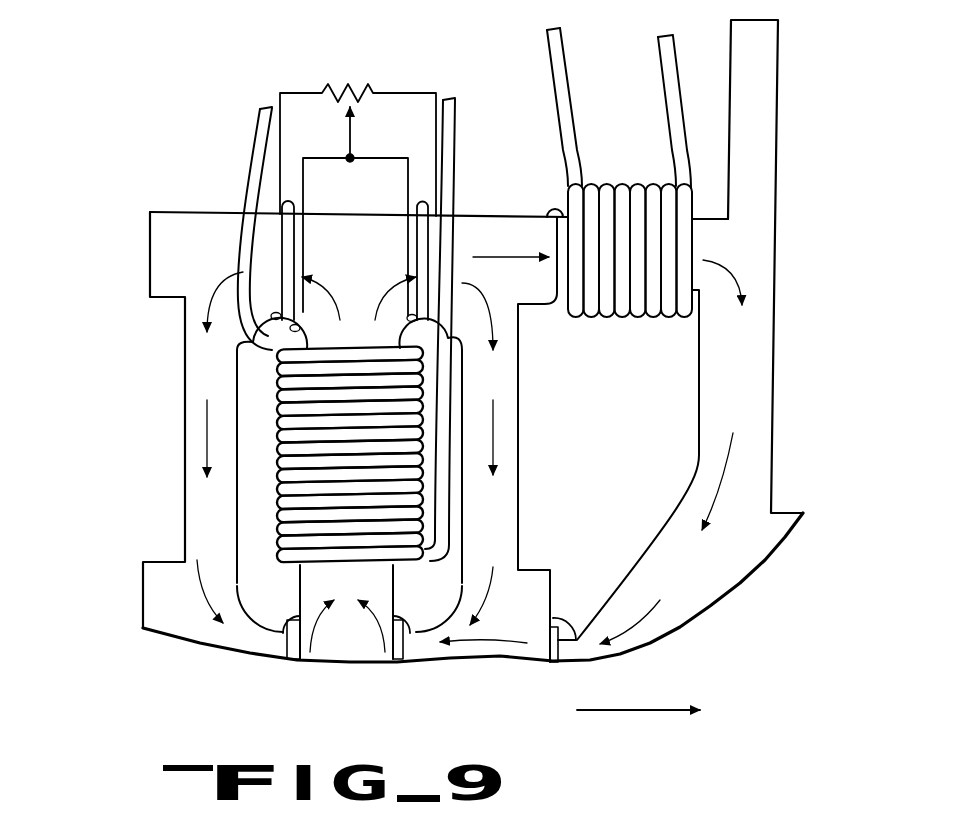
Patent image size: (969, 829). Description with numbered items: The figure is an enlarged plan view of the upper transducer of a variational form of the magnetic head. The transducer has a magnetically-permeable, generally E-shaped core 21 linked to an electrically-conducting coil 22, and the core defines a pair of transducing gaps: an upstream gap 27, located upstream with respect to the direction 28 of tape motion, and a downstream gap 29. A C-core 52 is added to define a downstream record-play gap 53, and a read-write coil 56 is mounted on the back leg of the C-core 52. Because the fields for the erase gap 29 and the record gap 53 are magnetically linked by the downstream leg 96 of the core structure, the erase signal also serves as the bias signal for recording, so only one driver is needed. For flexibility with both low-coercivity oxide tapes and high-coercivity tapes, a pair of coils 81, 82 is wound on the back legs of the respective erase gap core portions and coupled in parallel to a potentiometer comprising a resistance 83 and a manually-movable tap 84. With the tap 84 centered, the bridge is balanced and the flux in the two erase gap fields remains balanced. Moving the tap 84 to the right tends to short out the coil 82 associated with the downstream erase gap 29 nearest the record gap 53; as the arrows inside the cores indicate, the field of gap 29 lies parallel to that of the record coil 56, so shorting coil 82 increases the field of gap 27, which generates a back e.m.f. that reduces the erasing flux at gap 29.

The magnetically-permeable core 21 is at (162, 248).
The electrically-conducting coil 22 is at (276, 520).
The upstream transducing gap 27 is at (295, 664).
The direction of tape motion 28 is at (620, 710).
The downstream transducing gap 29 is at (397, 664).
The C-core 52 is at (762, 228).
The record-play gap 53 is at (549, 673).
The read-write coil 56 is at (620, 192).
The coil 81 is at (303, 237).
The coil 82 is at (410, 258).
The resistance 83 is at (332, 88).
The manually-movable tap 84 is at (350, 120).
The downstream leg 96 is at (512, 430).